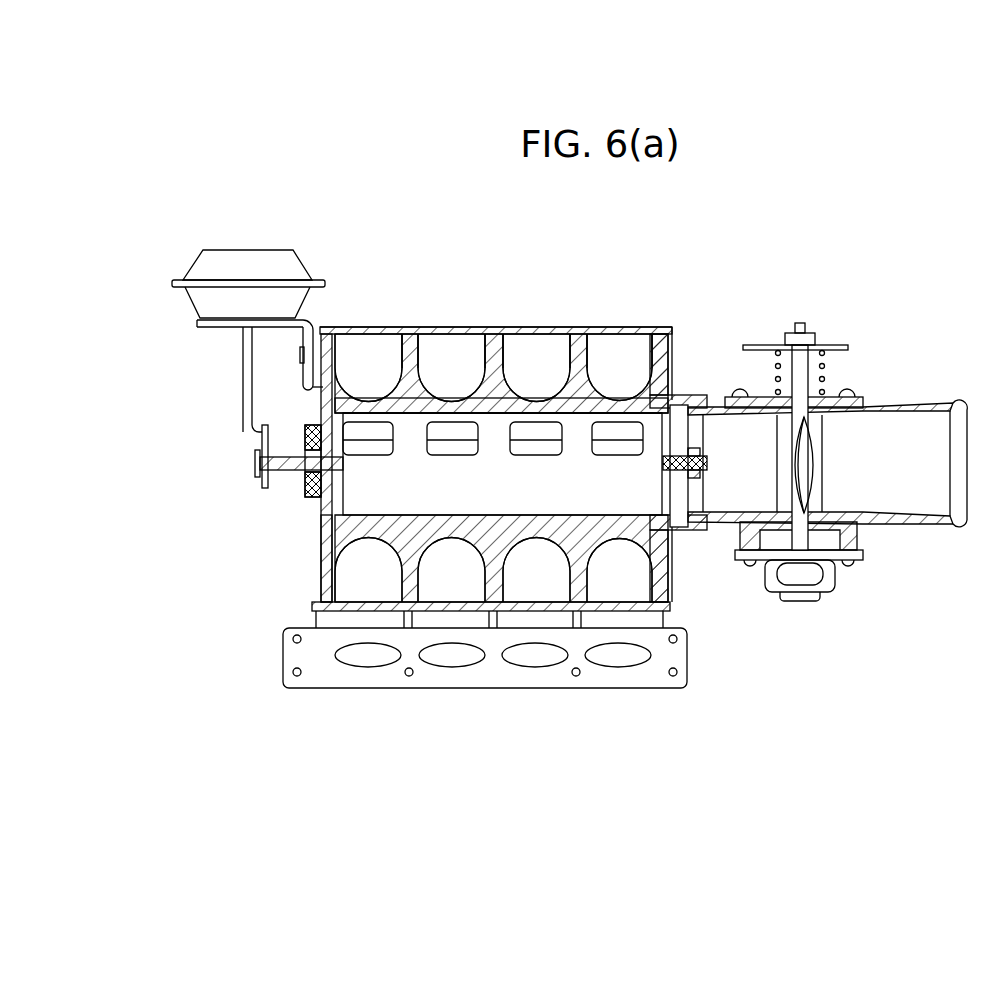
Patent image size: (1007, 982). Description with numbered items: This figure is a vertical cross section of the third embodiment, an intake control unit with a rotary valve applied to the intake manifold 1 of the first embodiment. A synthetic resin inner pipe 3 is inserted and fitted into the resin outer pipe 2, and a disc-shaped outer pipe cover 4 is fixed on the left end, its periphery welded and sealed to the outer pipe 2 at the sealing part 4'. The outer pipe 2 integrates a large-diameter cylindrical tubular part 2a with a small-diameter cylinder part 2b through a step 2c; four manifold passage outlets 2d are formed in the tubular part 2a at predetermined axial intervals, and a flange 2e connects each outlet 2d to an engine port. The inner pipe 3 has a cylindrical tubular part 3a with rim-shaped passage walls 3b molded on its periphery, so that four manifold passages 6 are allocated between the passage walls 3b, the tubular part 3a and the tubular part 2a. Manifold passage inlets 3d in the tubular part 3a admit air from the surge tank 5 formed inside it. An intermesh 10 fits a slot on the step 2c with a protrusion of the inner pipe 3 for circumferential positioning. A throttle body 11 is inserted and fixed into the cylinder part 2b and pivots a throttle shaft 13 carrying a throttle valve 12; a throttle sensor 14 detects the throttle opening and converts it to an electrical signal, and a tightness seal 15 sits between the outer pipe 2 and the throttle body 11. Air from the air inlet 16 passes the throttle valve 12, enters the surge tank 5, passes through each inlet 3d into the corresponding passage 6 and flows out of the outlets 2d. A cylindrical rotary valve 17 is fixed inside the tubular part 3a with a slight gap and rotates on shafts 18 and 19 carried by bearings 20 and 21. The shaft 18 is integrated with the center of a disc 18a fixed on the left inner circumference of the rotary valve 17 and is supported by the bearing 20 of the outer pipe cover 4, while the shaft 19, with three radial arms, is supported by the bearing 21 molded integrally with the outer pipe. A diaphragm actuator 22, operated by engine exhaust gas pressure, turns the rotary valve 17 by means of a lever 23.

The intake manifold 1 is at (619, 306).
The outer pipe 2 is at (525, 328).
The cylindrical tubular part 2a is at (448, 327).
The cylinder part 2b is at (945, 410).
The step 2c is at (688, 390).
The manifold passage outlet 2d is at (368, 661).
The flange 2e is at (690, 648).
The inner pipe 3 is at (597, 348).
The cylindrical tubular part 3a is at (408, 389).
The passage walls 3b is at (336, 352).
The manifold passage inlet 3d is at (372, 433).
The outer pipe cover 4 is at (294, 369).
The sealing part 4' is at (299, 322).
The surge tank 5 is at (497, 501).
The manifold passages 6 is at (376, 373).
The intermesh 10 is at (688, 388).
The throttle body 11 is at (830, 395).
The throttle valve 12 is at (815, 470).
The throttle shaft 13 is at (800, 322).
The throttle sensor 14 is at (827, 587).
The tightness seal 15 is at (832, 410).
The air inlet 16 is at (946, 474).
The rotary valve 17 is at (323, 556).
The shaft 18 is at (283, 462).
The disc 18a is at (323, 508).
The shaft 19 is at (707, 463).
The bearing 20 is at (305, 479).
The bearing 21 is at (702, 477).
The diaphragm actuator 22 is at (208, 250).
The lever 23 is at (260, 442).